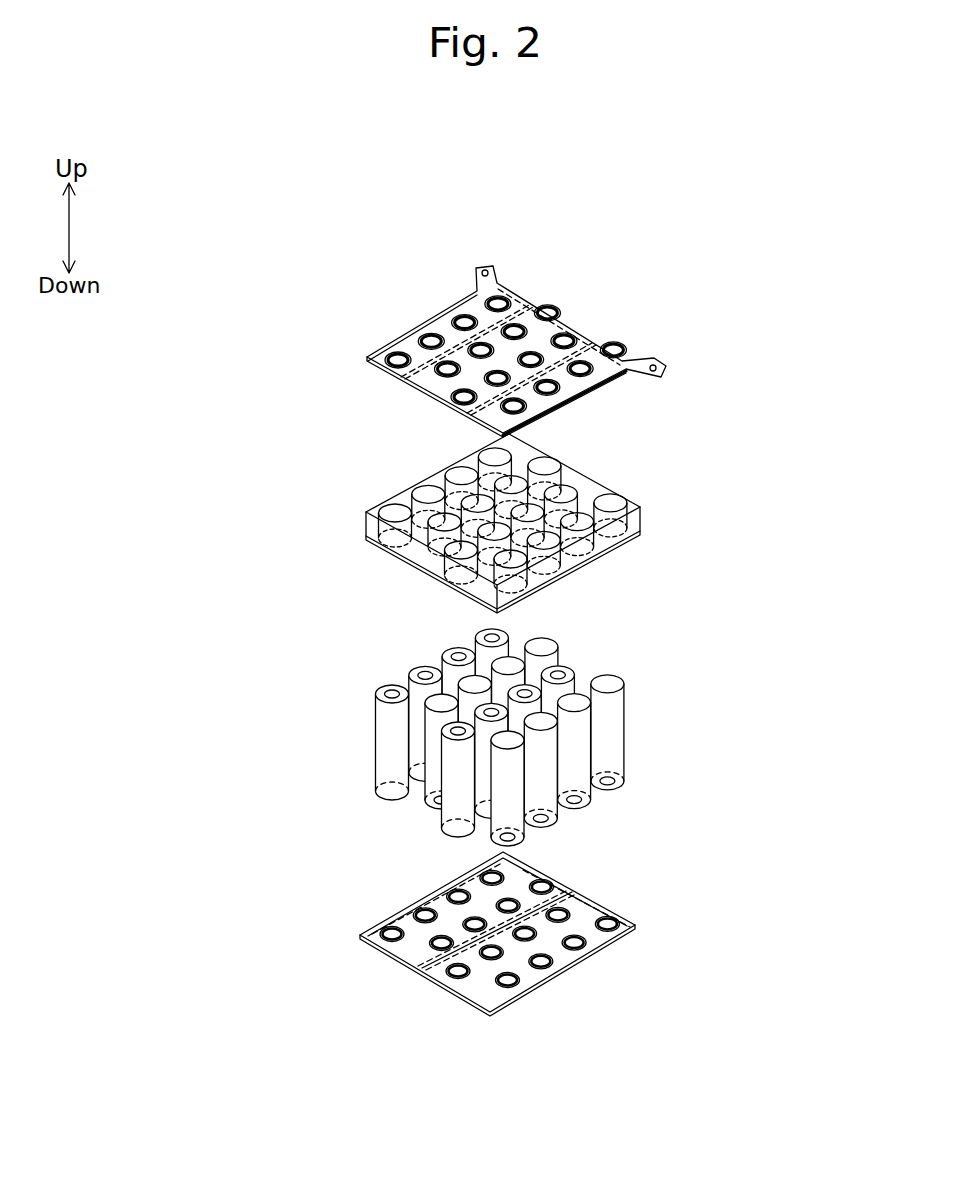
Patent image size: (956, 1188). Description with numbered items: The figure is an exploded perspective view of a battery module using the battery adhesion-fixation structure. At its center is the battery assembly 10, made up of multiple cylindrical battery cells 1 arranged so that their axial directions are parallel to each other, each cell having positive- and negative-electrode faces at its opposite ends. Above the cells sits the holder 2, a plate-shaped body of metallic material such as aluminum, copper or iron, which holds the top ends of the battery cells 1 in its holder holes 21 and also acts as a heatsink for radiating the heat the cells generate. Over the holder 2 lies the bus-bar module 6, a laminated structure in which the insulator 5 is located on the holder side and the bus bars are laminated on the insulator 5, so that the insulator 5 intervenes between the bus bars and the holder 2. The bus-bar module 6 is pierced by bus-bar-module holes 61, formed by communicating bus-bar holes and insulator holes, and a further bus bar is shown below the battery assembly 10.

The battery cell 1 is at (608, 712).
The holder 2 is at (365, 528).
The holder hole 21 is at (397, 512).
The insulator 5 is at (460, 303).
The bus-bar module 6 is at (570, 273).
The bus-bar-module hole 61 is at (392, 354).
The battery assembly 10 is at (334, 680).